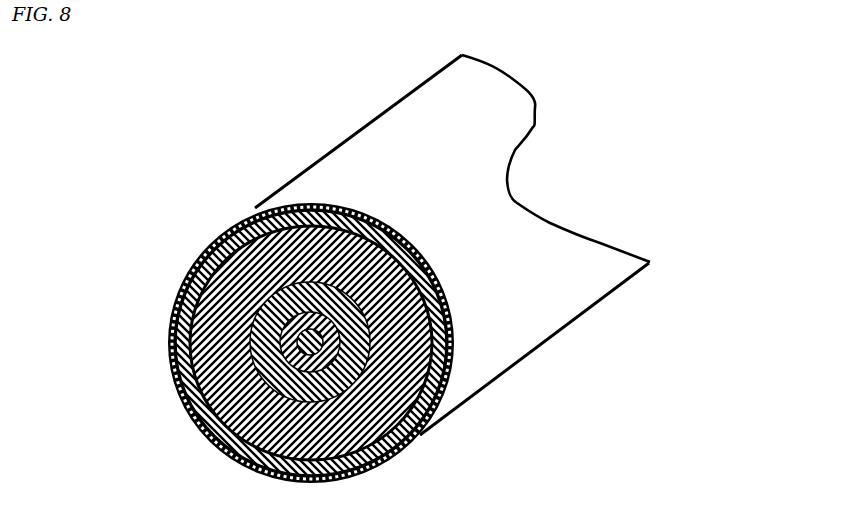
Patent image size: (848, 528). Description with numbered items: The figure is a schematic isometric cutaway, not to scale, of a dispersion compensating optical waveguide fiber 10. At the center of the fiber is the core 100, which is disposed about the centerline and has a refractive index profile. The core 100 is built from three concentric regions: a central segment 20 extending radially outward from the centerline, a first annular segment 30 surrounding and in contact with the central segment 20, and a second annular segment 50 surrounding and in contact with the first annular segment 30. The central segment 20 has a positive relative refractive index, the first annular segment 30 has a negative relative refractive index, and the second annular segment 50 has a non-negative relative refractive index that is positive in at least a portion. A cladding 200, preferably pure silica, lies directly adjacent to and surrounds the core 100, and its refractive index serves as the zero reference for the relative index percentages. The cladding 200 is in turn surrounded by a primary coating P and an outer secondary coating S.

The dispersion compensating optical fiber 10 is at (680, 83).
The central segment 20 is at (298, 334).
The first annular segment 30 is at (290, 352).
The second annular segment 50 is at (272, 394).
The core 100 is at (399, 349).
The cladding 200 is at (418, 438).
The secondary coating S is at (247, 213).
The primary coating P is at (180, 285).